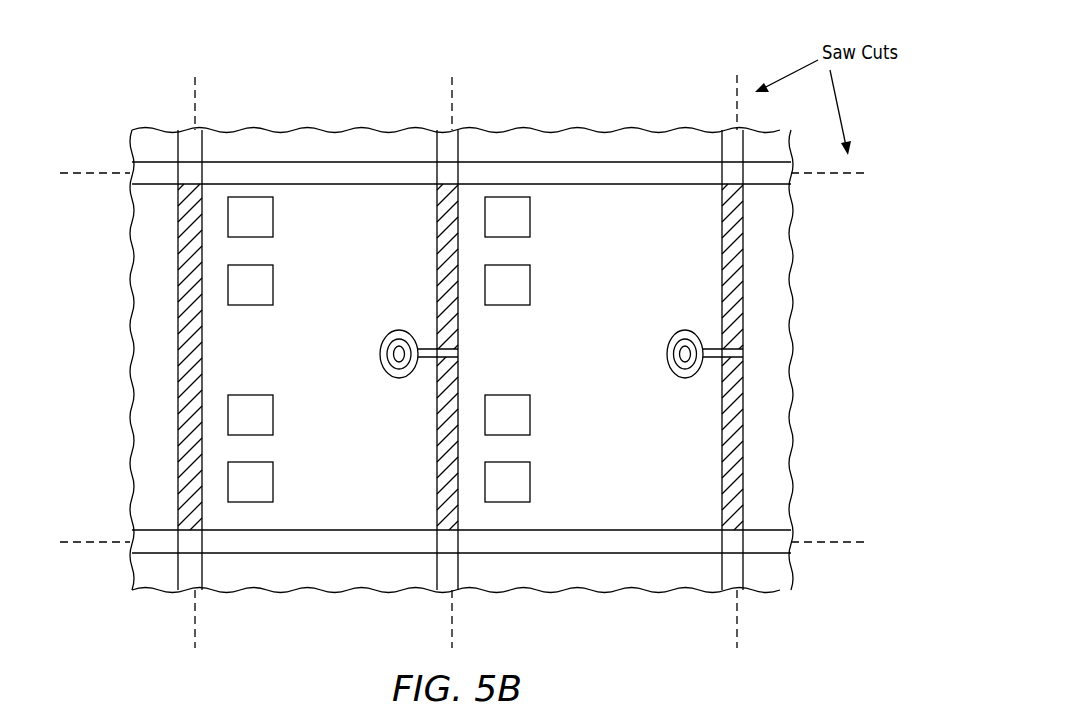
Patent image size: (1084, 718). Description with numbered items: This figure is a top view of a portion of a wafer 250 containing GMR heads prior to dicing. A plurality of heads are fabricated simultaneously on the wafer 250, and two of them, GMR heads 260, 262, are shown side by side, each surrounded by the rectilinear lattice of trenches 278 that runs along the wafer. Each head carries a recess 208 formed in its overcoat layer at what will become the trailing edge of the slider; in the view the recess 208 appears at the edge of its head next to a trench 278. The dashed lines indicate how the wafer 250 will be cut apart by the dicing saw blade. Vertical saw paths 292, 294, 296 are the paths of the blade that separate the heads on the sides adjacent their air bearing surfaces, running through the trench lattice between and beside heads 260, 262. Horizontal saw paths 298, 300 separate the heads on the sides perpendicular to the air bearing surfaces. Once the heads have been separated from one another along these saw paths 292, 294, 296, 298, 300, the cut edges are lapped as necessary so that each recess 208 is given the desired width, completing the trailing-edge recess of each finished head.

The wafer 250 is at (838, 247).
The trenches 278 is at (316, 162).
The GMR head 260 is at (343, 334).
The GMR head 262 is at (619, 324).
The recess 208 is at (458, 353).
The dicing saw path 292 is at (197, 87).
The dicing saw path 294 is at (454, 87).
The dicing saw path 296 is at (740, 88).
The saw path 300 is at (82, 176).
The saw path 298 is at (842, 540).